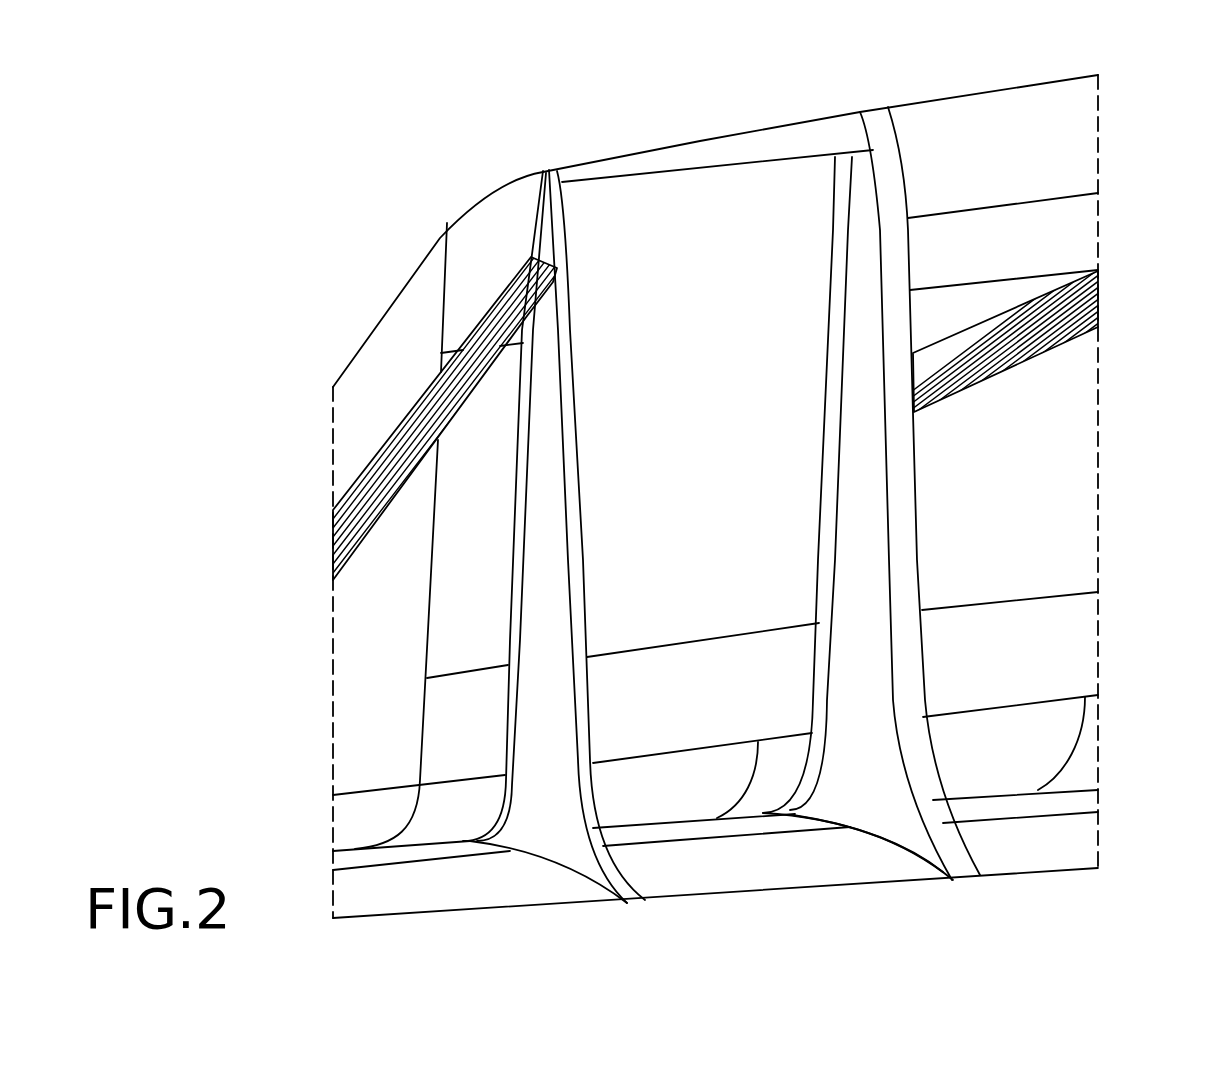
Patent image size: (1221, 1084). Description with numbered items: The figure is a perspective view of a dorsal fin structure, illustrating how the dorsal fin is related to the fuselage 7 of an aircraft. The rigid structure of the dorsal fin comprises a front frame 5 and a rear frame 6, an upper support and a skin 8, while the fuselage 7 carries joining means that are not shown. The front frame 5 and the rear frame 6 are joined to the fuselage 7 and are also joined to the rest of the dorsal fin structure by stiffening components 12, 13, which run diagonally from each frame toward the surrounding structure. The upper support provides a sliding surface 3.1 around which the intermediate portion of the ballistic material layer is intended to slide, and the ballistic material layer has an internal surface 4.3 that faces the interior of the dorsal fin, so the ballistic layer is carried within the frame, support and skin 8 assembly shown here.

The sliding surface 3.1 is at (787, 140).
The internal surface 4.3 is at (645, 203).
The front frame 5 is at (496, 608).
The rear frame 6 is at (822, 542).
The fuselage 7 is at (1030, 854).
The skin 8 is at (1030, 117).
The stiffening component 12 is at (347, 523).
The stiffening component 13 is at (1097, 302).